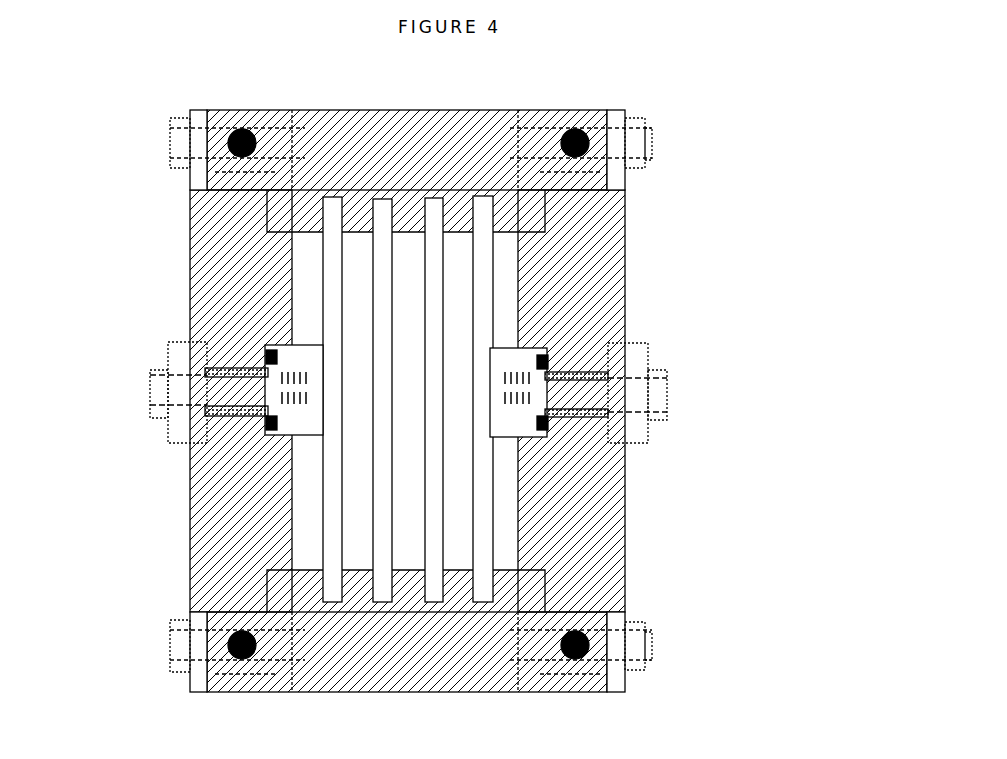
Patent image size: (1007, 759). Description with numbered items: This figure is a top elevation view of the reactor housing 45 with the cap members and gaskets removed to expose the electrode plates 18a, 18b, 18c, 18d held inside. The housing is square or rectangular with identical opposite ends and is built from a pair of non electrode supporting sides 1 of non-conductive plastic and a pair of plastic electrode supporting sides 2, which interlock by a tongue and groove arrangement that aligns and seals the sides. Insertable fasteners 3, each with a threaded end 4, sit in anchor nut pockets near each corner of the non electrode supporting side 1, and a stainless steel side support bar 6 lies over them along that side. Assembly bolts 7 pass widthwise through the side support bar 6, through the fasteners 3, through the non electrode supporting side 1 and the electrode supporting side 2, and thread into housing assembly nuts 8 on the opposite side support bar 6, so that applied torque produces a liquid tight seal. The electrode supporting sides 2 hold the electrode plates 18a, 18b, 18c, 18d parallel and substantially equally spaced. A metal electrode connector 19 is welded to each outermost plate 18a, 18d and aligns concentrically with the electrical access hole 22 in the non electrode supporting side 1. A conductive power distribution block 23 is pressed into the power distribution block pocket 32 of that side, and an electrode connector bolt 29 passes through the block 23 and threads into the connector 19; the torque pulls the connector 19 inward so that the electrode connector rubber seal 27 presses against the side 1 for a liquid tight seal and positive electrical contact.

The non electrode supporting side 1 is at (218, 240).
The electrode supporting side 2 is at (425, 182).
The insertable fastener 3 is at (236, 124).
The threaded end 4 is at (258, 138).
The side support bar 6 is at (203, 178).
The assembly bolt 7 is at (176, 146).
The housing assembly nut 8 is at (635, 145).
The electrode plate 18a is at (335, 258).
The electrode plate 18b is at (383, 250).
The electrode plate 18c is at (430, 222).
The electrode plate 18d is at (483, 222).
The electrode connector 19 is at (307, 425).
The electrical access hole 22 is at (228, 408).
The power distribution block 23 is at (180, 428).
The electrode connector rubber seal 27 is at (268, 352).
The electrode connector bolt 29 is at (158, 395).
The power distribution block pocket 32 is at (205, 375).
The reactor housing 45 is at (727, 237).